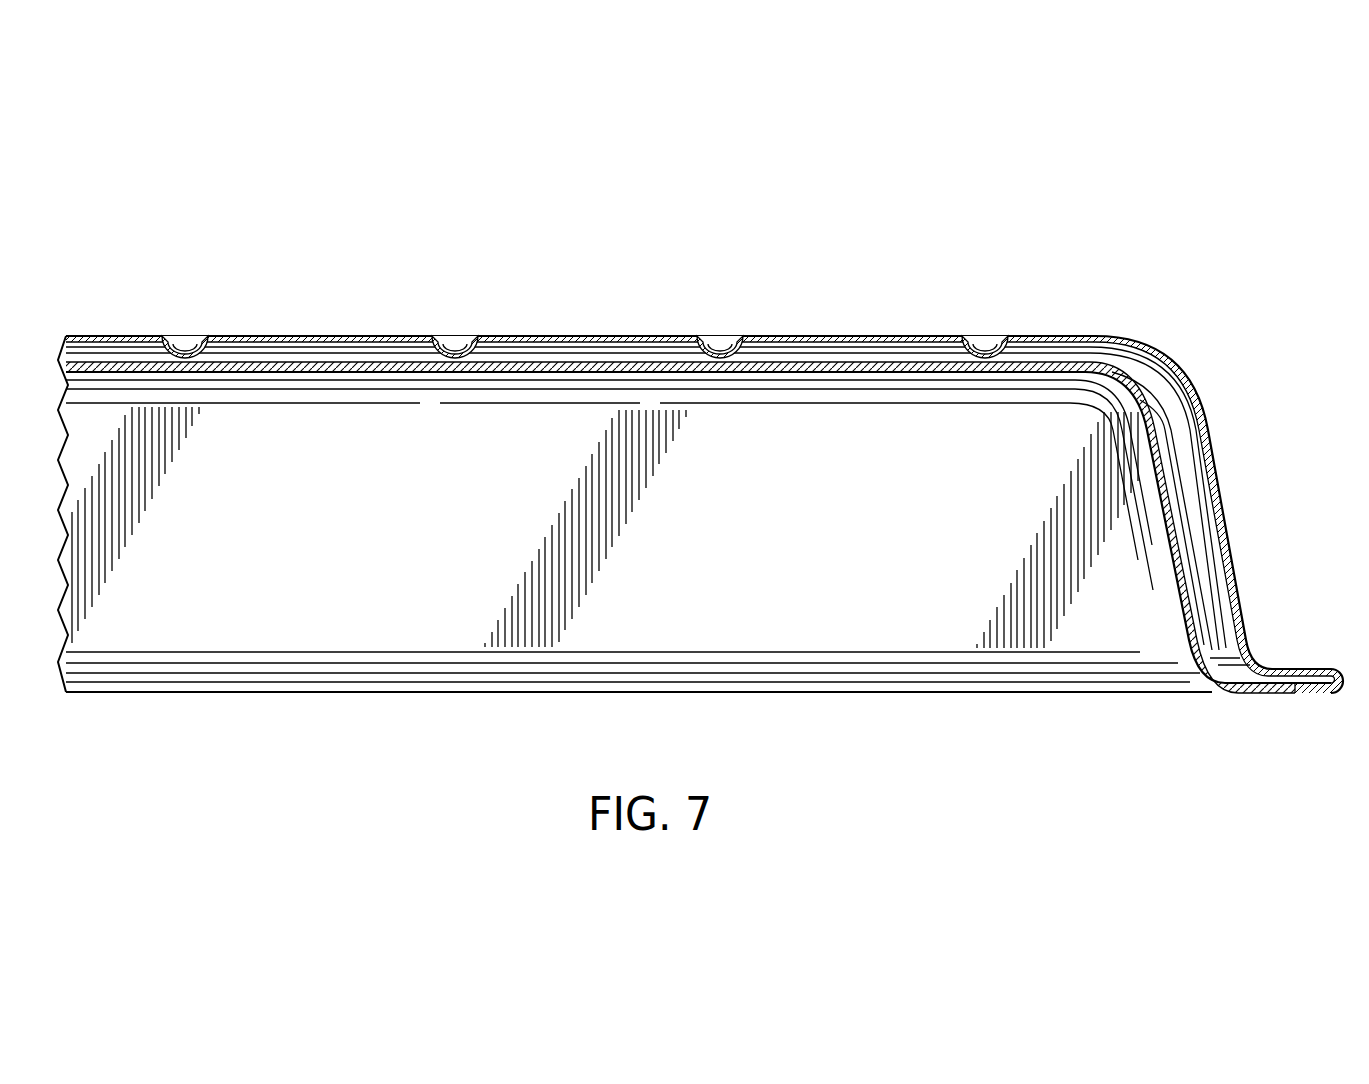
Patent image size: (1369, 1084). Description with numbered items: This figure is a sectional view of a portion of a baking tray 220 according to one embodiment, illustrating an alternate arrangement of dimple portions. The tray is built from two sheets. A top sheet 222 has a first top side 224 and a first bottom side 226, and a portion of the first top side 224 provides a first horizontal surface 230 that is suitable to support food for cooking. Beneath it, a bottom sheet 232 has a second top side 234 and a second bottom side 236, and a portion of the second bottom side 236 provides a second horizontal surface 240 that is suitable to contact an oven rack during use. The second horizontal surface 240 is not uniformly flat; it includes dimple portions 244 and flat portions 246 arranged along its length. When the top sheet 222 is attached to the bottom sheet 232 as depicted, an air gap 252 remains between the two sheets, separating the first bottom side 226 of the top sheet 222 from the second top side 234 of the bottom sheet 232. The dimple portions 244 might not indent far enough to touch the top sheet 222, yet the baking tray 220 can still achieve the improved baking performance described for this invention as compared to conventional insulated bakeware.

The baking tray 220 is at (1189, 284).
The top sheet 222 is at (1184, 640).
The first top side 224 is at (1182, 596).
The first bottom side 226 is at (1188, 548).
The first horizontal surface 230 is at (719, 377).
The bottom sheet 232 is at (1240, 541).
The second top side 234 is at (1192, 412).
The second bottom side 236 is at (1226, 452).
The second horizontal surface 240 is at (1058, 336).
The dimple portions 244 is at (992, 345).
The flat portions 246 is at (815, 335).
The air gap 252 is at (867, 358).